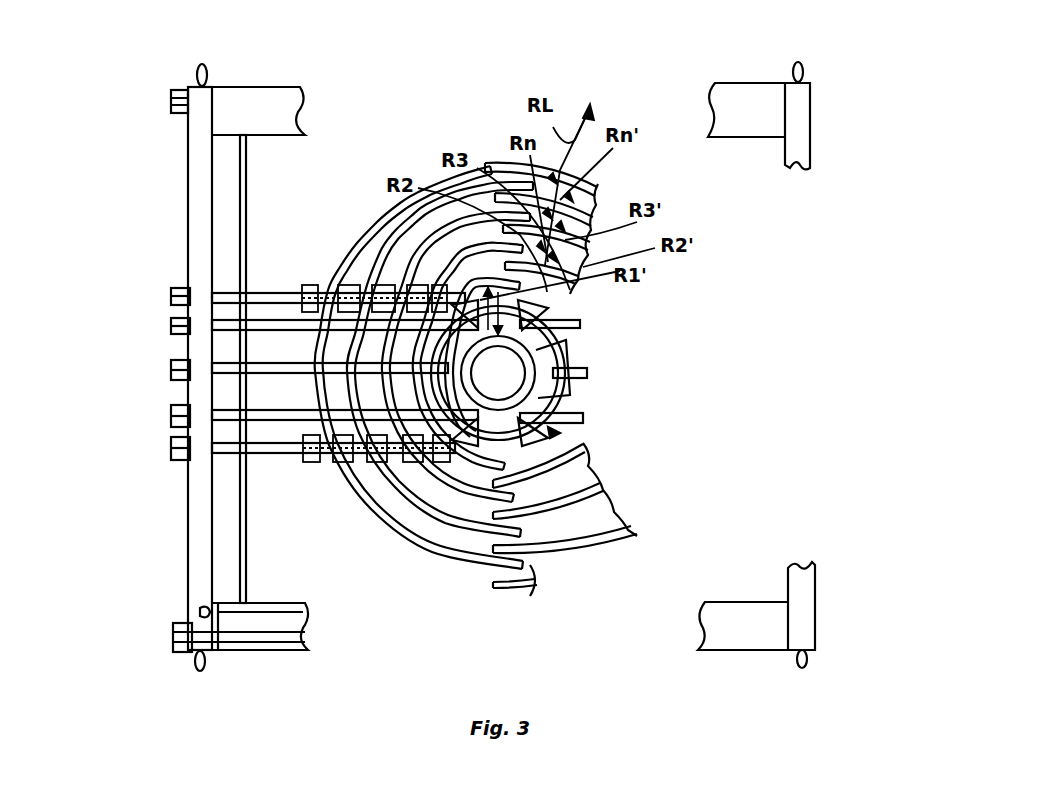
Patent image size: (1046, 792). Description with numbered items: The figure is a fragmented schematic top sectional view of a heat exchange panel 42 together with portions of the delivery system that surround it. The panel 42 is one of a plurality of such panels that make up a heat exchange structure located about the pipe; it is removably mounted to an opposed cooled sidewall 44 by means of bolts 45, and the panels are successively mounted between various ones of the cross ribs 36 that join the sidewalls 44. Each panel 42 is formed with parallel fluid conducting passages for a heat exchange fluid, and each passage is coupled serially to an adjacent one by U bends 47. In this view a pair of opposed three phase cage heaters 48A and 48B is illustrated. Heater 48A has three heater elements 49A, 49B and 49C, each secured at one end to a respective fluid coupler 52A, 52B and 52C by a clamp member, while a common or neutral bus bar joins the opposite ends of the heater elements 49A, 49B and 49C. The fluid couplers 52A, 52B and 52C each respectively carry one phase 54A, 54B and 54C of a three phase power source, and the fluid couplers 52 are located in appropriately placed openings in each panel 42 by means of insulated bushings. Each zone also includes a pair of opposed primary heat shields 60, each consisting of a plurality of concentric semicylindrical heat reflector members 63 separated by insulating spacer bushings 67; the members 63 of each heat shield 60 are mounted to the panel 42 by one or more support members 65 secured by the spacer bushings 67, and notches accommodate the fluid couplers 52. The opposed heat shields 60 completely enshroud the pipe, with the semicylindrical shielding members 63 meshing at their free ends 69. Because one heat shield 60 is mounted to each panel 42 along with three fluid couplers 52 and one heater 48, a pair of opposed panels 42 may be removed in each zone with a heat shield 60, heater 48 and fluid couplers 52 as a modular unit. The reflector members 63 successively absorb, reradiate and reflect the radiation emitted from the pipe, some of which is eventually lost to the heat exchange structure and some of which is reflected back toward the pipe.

The cross ribs 36 is at (246, 167).
The heat exchange panel 42 is at (188, 181).
The cooled sidewall 44 is at (272, 95).
The bolt 45 is at (171, 101).
The U bend 47 is at (198, 68).
The heater 48 is at (488, 428).
The three phase cage heater 48A is at (472, 424).
The three phase cage heater 48B is at (556, 433).
The heater element 49A is at (552, 410).
The heater element 49B is at (552, 362).
The heater element 49C is at (545, 313).
The fluid coupler 52 is at (498, 373).
The fluid coupler 52A is at (292, 424).
The fluid coupler 52B is at (300, 378).
The fluid coupler 52C is at (300, 332).
The three phase power source phase 54A is at (172, 420).
The three phase power source phase 54B is at (172, 370).
The three phase power source phase 54C is at (172, 326).
The primary heat shield 60 is at (385, 522).
The heat reflector member 63 is at (458, 568).
The support member 65 is at (262, 292).
The insulating spacer bushing 67 is at (345, 285).
The free end 69 is at (527, 596).